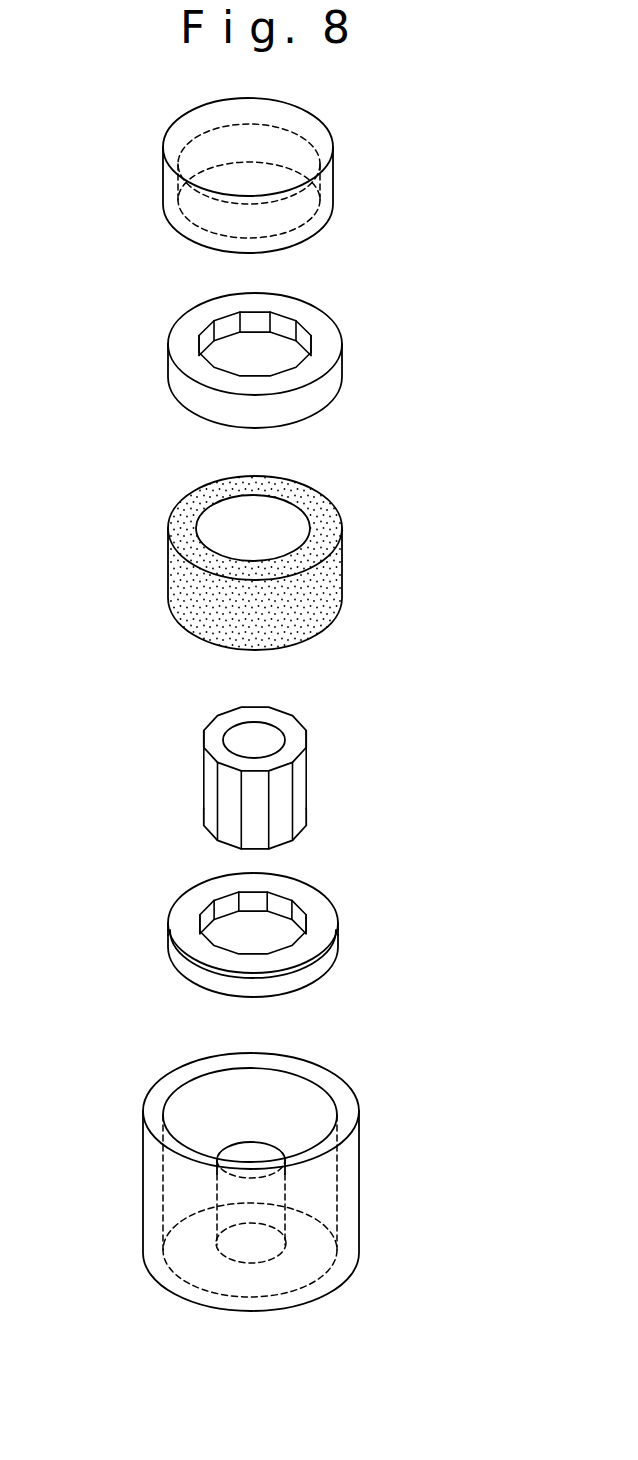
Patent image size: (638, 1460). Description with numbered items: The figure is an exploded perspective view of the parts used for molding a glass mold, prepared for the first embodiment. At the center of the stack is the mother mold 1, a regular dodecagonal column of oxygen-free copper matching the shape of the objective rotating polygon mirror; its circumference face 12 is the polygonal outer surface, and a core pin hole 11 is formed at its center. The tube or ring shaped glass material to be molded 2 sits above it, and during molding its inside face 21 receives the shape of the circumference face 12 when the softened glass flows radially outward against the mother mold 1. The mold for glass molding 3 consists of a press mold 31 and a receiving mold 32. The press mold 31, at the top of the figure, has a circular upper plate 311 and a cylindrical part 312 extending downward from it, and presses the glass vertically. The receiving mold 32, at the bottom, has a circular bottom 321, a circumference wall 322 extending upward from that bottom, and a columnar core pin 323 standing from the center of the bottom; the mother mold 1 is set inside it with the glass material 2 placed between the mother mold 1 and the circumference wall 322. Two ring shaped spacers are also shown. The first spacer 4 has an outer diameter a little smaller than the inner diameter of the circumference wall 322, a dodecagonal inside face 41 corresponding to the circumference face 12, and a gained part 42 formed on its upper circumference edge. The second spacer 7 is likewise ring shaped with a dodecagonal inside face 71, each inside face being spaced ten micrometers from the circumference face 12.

The mother mold 1 is at (326, 745).
The core pin hole 11 is at (240, 732).
The circumference face 12 is at (307, 800).
The glass material to be molded 2 is at (358, 583).
The inside face 21 is at (290, 532).
The mold for glass molding 3 is at (372, 1275).
The press mold 31 is at (350, 159).
The circular upper plate 311 is at (197, 123).
The cylindrical part 312 is at (163, 180).
The receiving mold 32 is at (373, 1174).
The circular bottom 321 is at (207, 1303).
The circumference wall 322 is at (153, 1190).
The columnar core pin 323 is at (287, 1213).
The first spacer 4 is at (357, 954).
The inside face 41 is at (223, 903).
The gained part 42 is at (335, 928).
The second spacer 7 is at (354, 316).
The inside face 71 is at (225, 322).